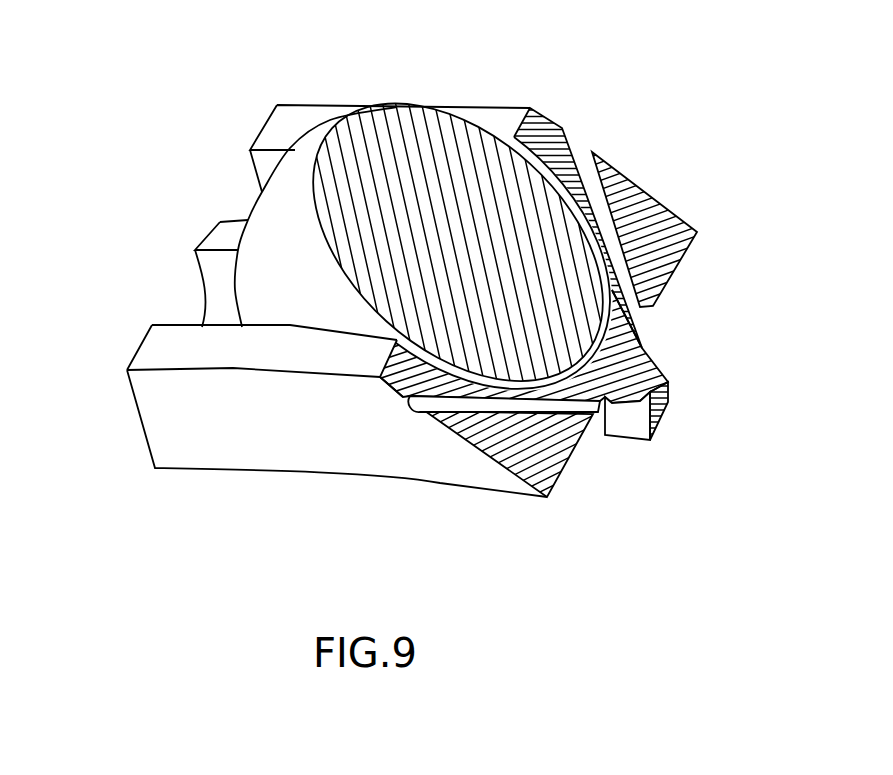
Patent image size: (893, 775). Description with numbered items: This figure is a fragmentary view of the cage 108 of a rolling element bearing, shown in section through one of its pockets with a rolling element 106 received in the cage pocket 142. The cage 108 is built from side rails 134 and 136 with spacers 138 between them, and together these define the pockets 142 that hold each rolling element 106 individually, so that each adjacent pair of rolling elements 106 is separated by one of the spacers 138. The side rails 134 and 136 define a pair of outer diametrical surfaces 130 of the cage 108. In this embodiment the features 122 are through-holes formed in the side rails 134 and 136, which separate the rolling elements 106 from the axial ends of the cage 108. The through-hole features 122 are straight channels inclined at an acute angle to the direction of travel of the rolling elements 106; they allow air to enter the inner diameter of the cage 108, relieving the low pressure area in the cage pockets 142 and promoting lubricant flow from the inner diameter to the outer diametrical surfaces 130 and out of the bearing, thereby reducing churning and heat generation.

The rolling element 106 is at (425, 132).
The cage 108 is at (408, 293).
The through-hole features 122 is at (590, 187).
The outer diametrical surfaces 130 is at (305, 115).
The side rail 134 is at (205, 450).
The side rail 136 is at (257, 162).
The spacer 138 is at (220, 222).
The cage pocket 142 is at (613, 340).